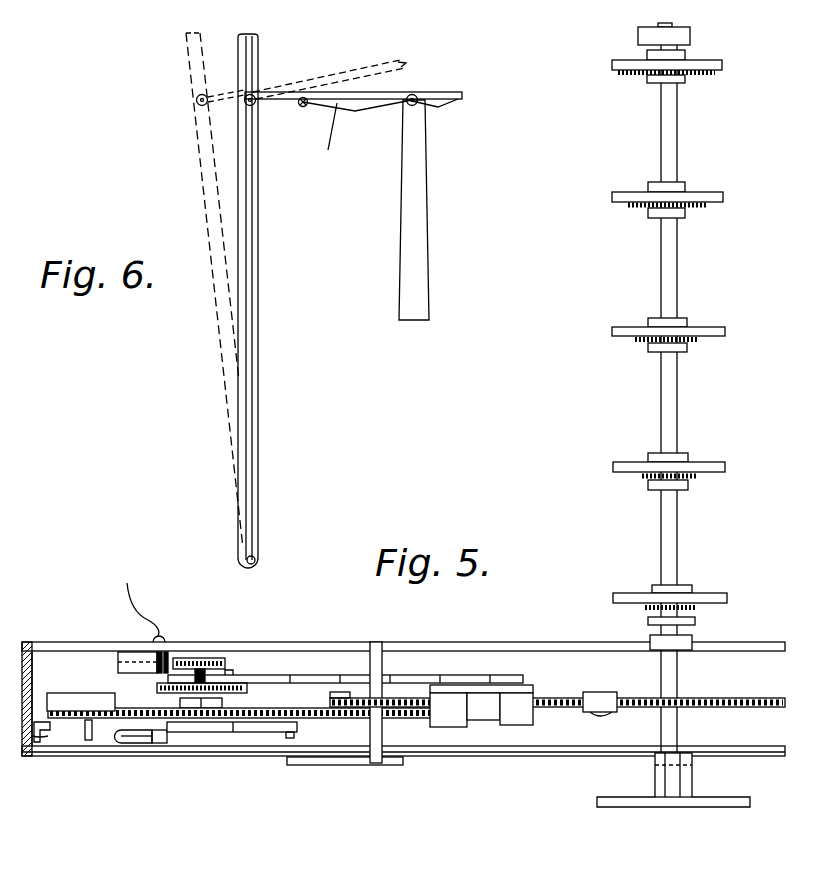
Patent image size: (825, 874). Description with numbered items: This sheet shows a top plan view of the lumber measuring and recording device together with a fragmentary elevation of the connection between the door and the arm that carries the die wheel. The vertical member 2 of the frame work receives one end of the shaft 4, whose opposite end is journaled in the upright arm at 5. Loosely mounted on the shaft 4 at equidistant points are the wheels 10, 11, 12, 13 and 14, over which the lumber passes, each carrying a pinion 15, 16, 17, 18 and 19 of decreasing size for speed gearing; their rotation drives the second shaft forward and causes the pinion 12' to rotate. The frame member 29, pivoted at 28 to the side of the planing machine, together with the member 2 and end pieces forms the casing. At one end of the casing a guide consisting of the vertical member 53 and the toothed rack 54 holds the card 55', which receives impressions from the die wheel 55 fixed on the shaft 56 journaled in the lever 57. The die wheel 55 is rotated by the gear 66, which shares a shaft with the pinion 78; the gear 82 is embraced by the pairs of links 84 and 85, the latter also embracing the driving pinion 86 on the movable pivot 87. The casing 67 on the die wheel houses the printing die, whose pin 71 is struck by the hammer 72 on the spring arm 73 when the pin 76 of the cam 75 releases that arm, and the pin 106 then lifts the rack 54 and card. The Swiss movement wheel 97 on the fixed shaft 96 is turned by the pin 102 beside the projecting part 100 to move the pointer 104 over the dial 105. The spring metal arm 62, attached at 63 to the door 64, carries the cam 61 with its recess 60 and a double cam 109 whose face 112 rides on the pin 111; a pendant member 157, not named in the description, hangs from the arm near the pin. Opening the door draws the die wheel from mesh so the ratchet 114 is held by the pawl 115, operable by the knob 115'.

In FIG. 5, the vertical member 2 is at (507, 650).
In FIG. 5, the shaft 4 is at (683, 262).
In FIG. 5, the journal of shaft 4 5 is at (673, 27).
In FIG. 5, the wheel 10 is at (700, 96).
In FIG. 5, the wheel 11 is at (731, 188).
In FIG. 5, the wheel 12 is at (686, 338).
In FIG. 5, the wheel 13 is at (725, 468).
In FIG. 5, the wheel 14 is at (727, 598).
In FIG. 5, the pinion 15 is at (648, 80).
In FIG. 5, the pinion 16 is at (637, 209).
In FIG. 5, the pinion 17 is at (640, 345).
In FIG. 5, the pinion 18 is at (630, 492).
In FIG. 5, the pinion 19 is at (648, 620).
In FIG. 5, the pinion 12' is at (557, 721).
In FIG. 5, the pivot 28 is at (688, 768).
In FIG. 5, the frame member 29 is at (548, 747).
In FIG. 5, the vertical member 53 is at (35, 646).
In FIG. 5, the toothed rack 54 is at (40, 742).
In FIG. 5, the die wheel 55 is at (232, 761).
In FIG. 5, the card 55' is at (54, 699).
In FIG. 5, the shaft 56 is at (196, 657).
In FIG. 5, the lever 57 is at (208, 682).
In FIG. 6, the recess 60 is at (414, 106).
In FIG. 6, the cam 61 is at (446, 99).
In FIG. 6, the arm 62 is at (284, 92).
In FIG. 6, the attachment point 63 is at (246, 104).
In FIG. 6, the door 64 is at (258, 366).
In FIG. 5, the gear 66 is at (433, 721).
In FIG. 5, the casing 67 is at (89, 700).
In FIG. 5, the pin 71 is at (89, 741).
In FIG. 5, the hammer 72 is at (156, 745).
In FIG. 5, the spring arm 73 is at (168, 740).
In FIG. 5, the cam 75 is at (233, 733).
In FIG. 5, the pin 76 is at (290, 740).
In FIG. 5, the pinion 78 is at (326, 703).
In FIG. 5, the gear 82 is at (506, 714).
In FIG. 5, the pair of links 84 is at (480, 716).
In FIG. 5, the pair of links 85 is at (563, 688).
In FIG. 5, the driving pinion 86 is at (624, 693).
In FIG. 5, the pivot 87 is at (598, 712).
In FIG. 5, the shaft 96 is at (378, 736).
In FIG. 5, the wheel 97 is at (287, 683).
In FIG. 5, the lateral projecting part 100 is at (232, 695).
In FIG. 5, the pin 102 is at (233, 678).
In FIG. 5, the pointer 104 is at (345, 766).
In FIG. 5, the dial 105 is at (468, 758).
In FIG. 5, the pin 106 is at (50, 732).
In FIG. 6, the double cam 109 is at (318, 141).
In FIG. 6, the pin 111 is at (301, 107).
In FIG. 6, the cam face 112 is at (368, 104).
In FIG. 5, the ratchet 114 is at (170, 650).
In FIG. 5, the pawl 115 is at (142, 638).
In FIG. 5, the knob 115' is at (134, 598).
In FIG. 6, the pendant bar 157 is at (435, 232).